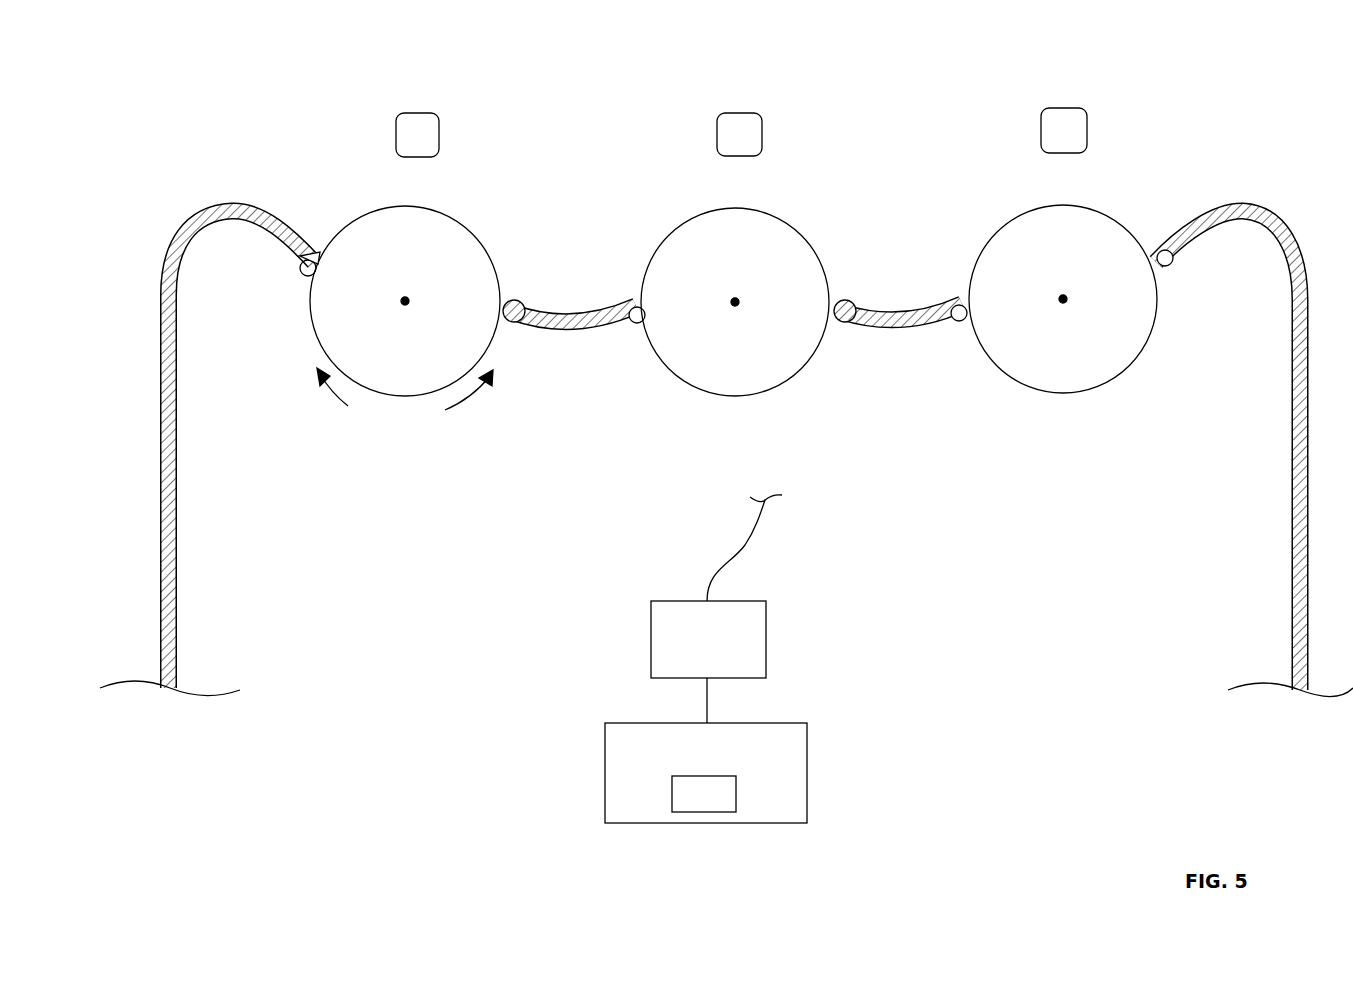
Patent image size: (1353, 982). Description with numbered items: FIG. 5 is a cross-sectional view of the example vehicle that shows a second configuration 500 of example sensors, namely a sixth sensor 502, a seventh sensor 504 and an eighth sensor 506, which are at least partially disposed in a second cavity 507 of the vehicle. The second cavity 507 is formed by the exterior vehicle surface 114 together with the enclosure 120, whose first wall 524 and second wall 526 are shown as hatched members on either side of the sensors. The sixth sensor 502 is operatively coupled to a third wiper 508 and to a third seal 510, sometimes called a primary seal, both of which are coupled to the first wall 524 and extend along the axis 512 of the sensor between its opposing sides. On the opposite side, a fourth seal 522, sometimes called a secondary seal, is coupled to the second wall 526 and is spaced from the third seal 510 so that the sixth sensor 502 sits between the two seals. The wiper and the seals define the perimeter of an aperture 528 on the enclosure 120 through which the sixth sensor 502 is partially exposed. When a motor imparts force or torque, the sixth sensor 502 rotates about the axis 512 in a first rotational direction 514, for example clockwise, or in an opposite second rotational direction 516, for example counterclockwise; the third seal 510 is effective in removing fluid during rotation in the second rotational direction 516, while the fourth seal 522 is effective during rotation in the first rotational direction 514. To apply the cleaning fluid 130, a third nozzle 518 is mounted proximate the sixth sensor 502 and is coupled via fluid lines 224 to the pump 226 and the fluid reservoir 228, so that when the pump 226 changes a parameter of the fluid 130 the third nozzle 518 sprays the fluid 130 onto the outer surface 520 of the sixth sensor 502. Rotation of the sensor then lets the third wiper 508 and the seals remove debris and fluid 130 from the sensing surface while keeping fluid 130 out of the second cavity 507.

The second configuration 500 is at (234, 93).
The sixth sensor 502 is at (405, 301).
The seventh sensor 504 is at (735, 302).
The eighth sensor 506 is at (1063, 299).
The second cavity 507 is at (1255, 285).
The third wiper 508 is at (318, 250).
The third seal 510 is at (303, 278).
The axis 512 is at (408, 306).
The first rotational direction 514 is at (345, 406).
The second rotational direction 516 is at (460, 405).
The third nozzle 518 is at (439, 135).
The outer surface 520 is at (453, 215).
The fourth seal 522 is at (517, 300).
The first wall 524 is at (276, 216).
The second wall 526 is at (562, 332).
The aperture 528 is at (503, 333).
The exterior vehicle surface 114 is at (1003, 259).
The enclosure 120 is at (1310, 440).
The fluid lines 224 is at (756, 543).
The pump 226 is at (766, 678).
The fluid reservoir 228 is at (807, 823).
The fluid 130 is at (704, 794).